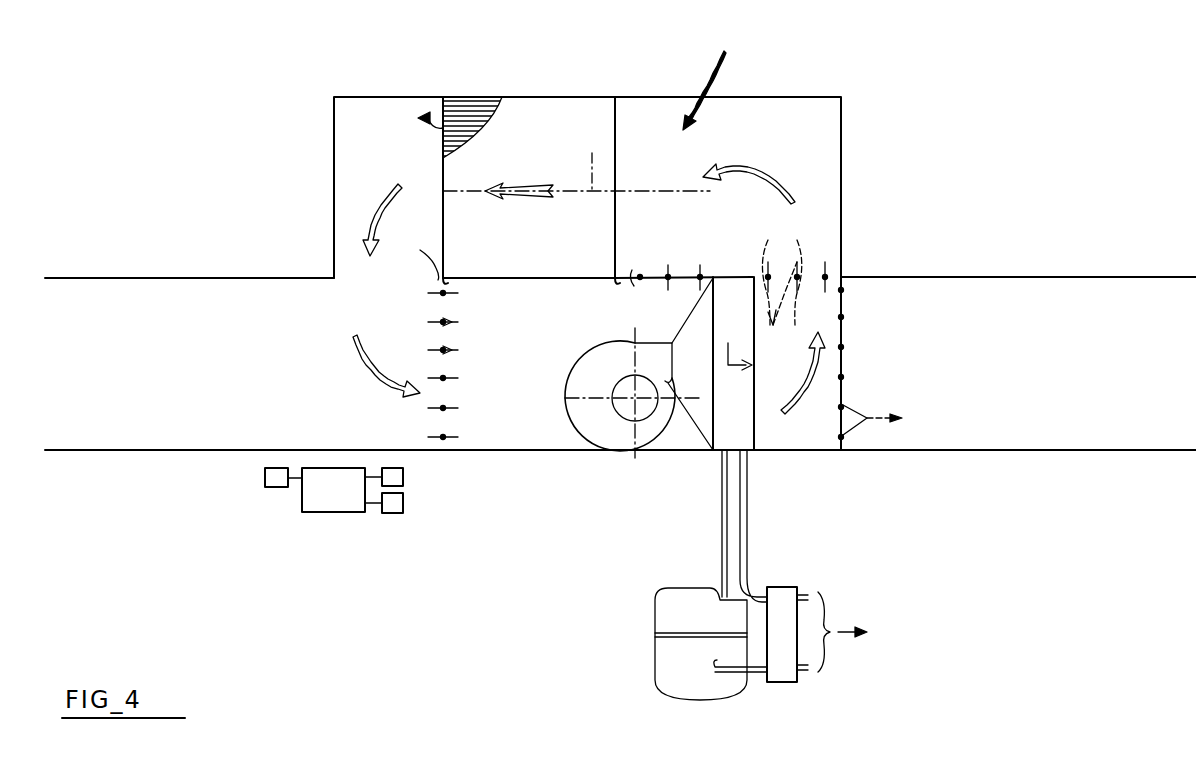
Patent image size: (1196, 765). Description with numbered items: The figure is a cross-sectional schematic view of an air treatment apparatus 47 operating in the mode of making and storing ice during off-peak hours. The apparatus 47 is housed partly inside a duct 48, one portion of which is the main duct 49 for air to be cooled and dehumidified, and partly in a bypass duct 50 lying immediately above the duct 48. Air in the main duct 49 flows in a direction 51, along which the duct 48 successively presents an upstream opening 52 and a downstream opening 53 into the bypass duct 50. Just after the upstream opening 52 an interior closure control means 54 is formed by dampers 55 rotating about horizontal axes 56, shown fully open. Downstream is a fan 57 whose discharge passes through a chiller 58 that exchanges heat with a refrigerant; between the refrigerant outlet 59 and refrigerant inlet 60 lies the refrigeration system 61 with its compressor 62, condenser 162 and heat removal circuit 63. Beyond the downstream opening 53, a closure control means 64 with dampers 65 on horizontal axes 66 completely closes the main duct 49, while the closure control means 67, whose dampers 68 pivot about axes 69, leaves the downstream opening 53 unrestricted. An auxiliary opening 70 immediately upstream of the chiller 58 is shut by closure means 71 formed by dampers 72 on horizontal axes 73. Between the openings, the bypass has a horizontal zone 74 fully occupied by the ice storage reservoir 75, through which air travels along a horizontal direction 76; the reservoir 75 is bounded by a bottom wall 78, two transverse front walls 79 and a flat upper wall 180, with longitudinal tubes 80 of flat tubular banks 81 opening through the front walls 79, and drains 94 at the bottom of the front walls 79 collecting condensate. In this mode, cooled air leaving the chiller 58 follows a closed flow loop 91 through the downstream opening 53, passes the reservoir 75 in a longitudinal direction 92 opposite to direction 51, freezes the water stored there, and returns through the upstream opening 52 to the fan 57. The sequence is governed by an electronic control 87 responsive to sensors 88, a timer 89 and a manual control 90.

The apparatus 47 is at (722, 75).
The duct 48 is at (78, 455).
The main duct 49 is at (198, 425).
The bypass duct 50 is at (827, 120).
The direction 51 is at (733, 363).
The upstream opening 52 is at (353, 283).
The downstream opening 53 is at (805, 297).
The interior closure control means 54 is at (455, 455).
The dampers 55 is at (458, 312).
The horizontal axes 56 is at (435, 328).
The fan 57 is at (632, 437).
The chiller 58 is at (737, 425).
The refrigerant outlet 59 is at (718, 458).
The refrigerant inlet 60 is at (752, 465).
The refrigeration system 61 is at (655, 600).
The compressor 62 is at (688, 688).
The heat removal circuit 63 is at (863, 632).
The closure control means 64 is at (860, 437).
The dampers 65 is at (850, 383).
The horizontal axes 66 is at (889, 418).
The closure control means 67 is at (815, 262).
The dampers 68 is at (759, 195).
The axes 69 is at (793, 373).
The auxiliary opening 70 is at (660, 272).
The closure means 71 is at (638, 290).
The dampers 72 is at (672, 282).
The horizontal axes 73 is at (672, 275).
The horizontal zone 74 is at (590, 112).
The ice storage reservoir 75 is at (515, 100).
The horizontal direction 76 is at (592, 158).
The bottom wall 78 is at (560, 280).
The front walls 79 is at (442, 178).
The longitudinal tubes 80 is at (412, 117).
The flat tubular banks 81 is at (478, 98).
The electronic control 87 is at (323, 500).
The sensors 88 is at (390, 467).
The timer 89 is at (275, 468).
The manual control 90 is at (398, 513).
The closed flow loop 91 is at (773, 167).
The longitudinal direction 92 is at (540, 196).
The drains 94 is at (633, 250).
The condenser 162 is at (793, 590).
The flat upper wall 180 is at (453, 97).